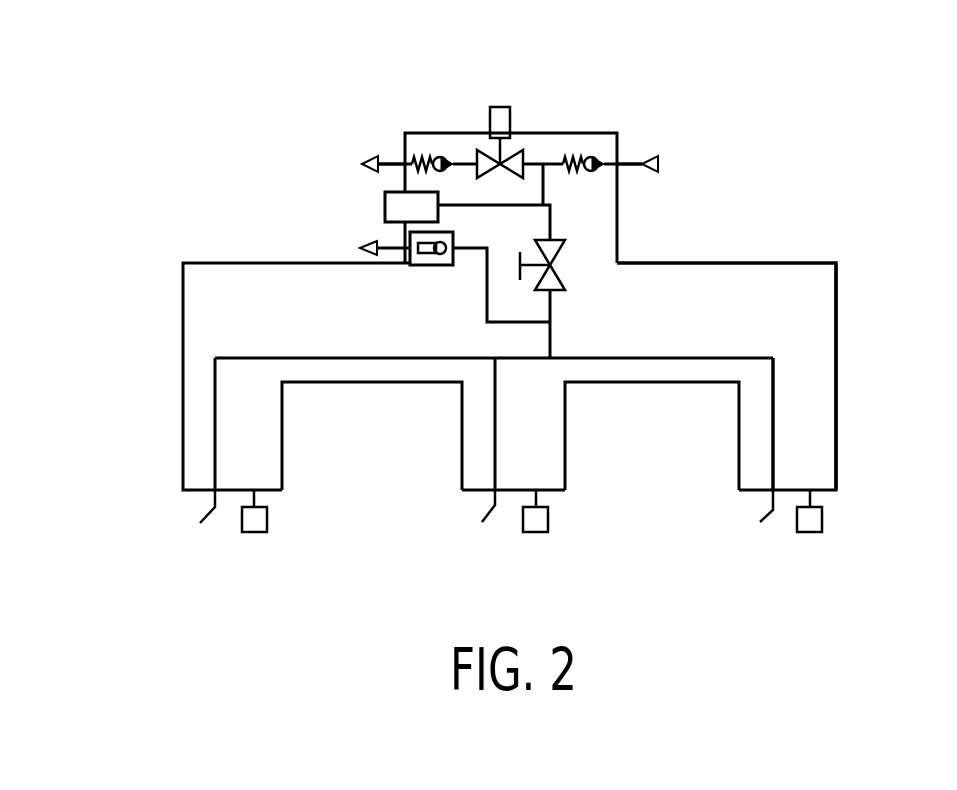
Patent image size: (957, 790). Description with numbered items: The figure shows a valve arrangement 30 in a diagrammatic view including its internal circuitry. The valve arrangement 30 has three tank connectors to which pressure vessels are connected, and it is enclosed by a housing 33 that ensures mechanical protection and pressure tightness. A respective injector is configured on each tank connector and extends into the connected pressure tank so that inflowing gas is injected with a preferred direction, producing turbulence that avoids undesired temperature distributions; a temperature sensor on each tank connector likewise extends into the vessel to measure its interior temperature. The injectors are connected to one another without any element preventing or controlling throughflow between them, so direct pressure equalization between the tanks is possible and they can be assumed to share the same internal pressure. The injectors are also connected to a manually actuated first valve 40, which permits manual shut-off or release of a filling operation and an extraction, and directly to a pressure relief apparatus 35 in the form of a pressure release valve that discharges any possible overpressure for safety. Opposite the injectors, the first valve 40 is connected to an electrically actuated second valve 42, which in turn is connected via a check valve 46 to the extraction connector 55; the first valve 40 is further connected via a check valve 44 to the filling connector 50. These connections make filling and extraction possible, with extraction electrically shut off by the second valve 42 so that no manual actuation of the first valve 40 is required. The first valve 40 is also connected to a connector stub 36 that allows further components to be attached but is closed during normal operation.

The valve arrangement 30 is at (182, 303).
The housing 33 is at (725, 263).
The pressure relief apparatus 35 is at (405, 240).
The connector stub 36 is at (392, 210).
The first valve 40 is at (562, 280).
The second valve 42 is at (522, 158).
The check valve 44 is at (588, 158).
The check valve 46 is at (439, 158).
The filling connector 50 is at (619, 162).
The extraction connector 55 is at (406, 163).